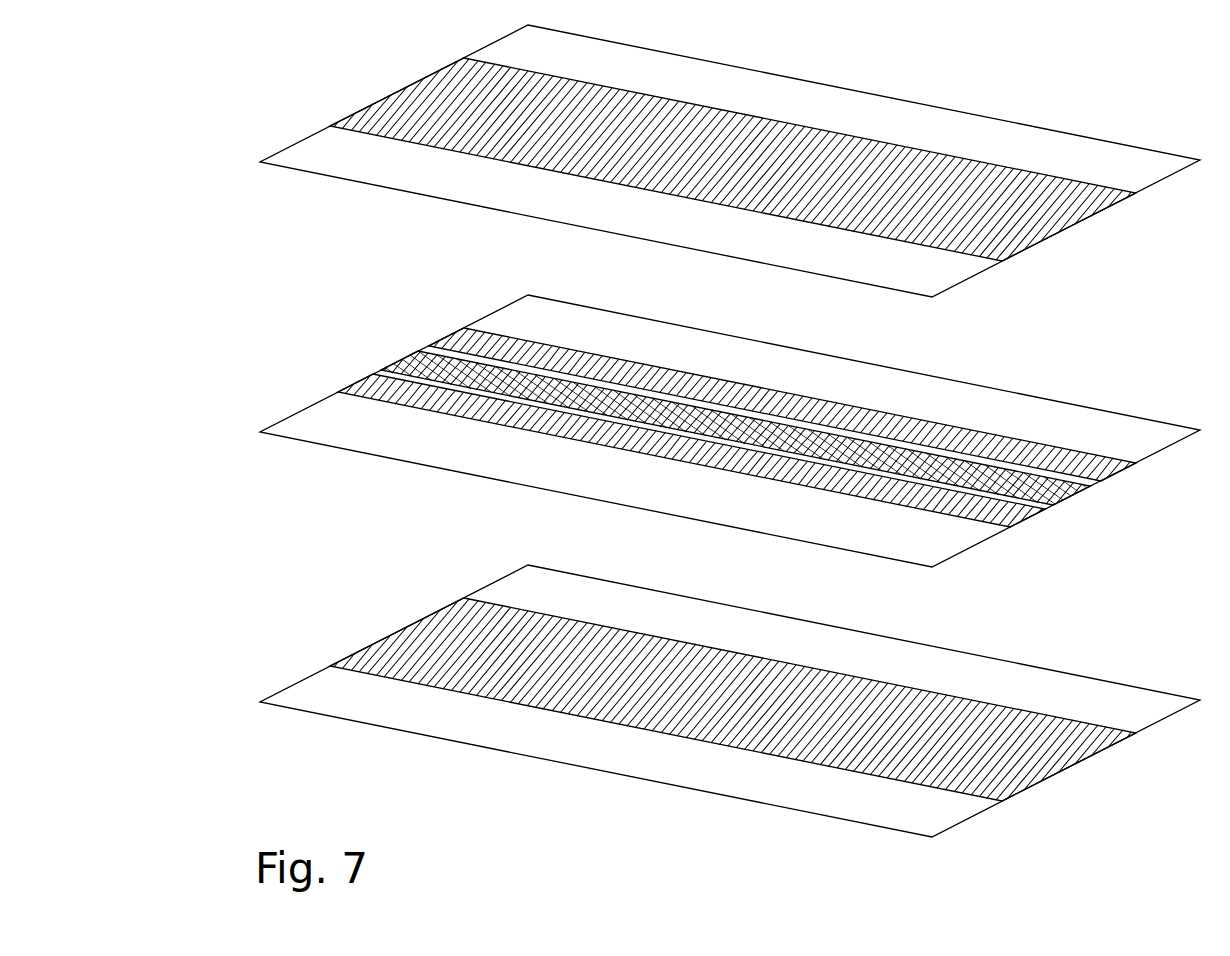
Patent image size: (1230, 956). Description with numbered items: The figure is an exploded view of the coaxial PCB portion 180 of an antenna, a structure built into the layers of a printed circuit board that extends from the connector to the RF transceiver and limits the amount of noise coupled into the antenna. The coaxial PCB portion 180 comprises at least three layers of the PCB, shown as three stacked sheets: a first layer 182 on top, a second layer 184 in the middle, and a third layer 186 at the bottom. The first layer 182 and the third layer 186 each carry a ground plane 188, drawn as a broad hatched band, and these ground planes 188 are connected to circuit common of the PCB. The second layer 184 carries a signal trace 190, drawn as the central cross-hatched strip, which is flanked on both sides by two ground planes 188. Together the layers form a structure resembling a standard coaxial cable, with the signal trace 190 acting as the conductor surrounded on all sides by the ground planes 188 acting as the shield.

The coaxial PCB portion 180 is at (325, 68).
The first layer 182 is at (943, 107).
The second layer 184 is at (390, 456).
The third layer 186 is at (567, 764).
The ground planes 188 is at (1060, 232).
The signal trace 190 is at (1068, 497).